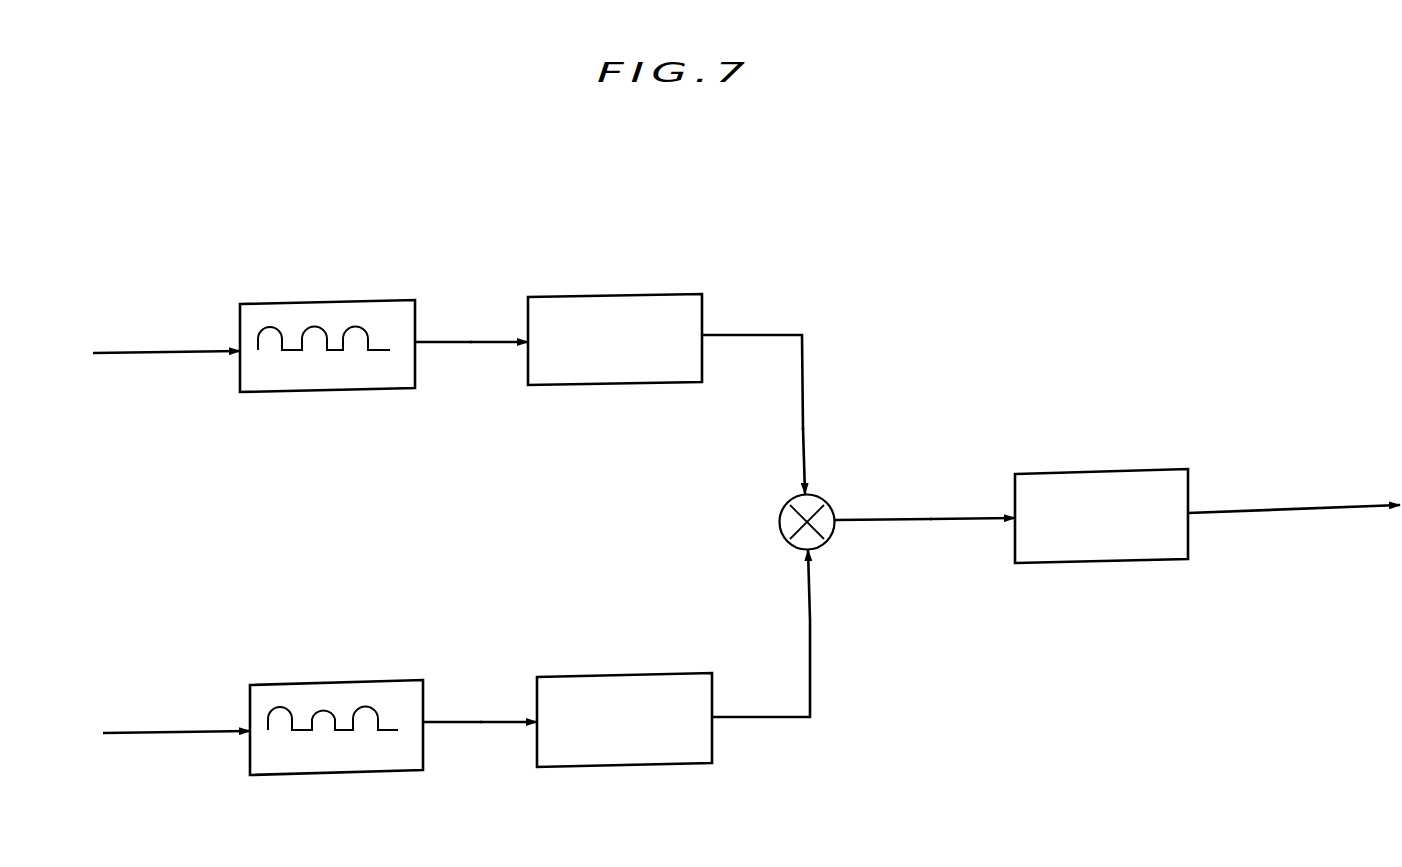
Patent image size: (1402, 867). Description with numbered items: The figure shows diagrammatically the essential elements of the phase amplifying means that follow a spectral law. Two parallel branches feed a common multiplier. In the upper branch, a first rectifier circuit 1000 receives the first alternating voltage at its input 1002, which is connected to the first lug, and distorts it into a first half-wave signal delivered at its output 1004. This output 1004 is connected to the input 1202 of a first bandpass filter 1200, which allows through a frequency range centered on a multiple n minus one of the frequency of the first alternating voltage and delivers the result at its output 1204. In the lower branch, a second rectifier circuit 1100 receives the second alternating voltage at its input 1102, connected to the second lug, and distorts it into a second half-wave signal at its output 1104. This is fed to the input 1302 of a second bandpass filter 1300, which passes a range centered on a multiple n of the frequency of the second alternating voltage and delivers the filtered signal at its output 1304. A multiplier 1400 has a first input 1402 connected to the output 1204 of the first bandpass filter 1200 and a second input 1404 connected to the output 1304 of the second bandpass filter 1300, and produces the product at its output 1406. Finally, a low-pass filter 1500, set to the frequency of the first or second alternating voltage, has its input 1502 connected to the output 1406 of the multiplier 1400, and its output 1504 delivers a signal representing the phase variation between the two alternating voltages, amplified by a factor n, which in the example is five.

The first rectifier circuit 1000 is at (333, 380).
The input of first rectifier circuit 1002 is at (238, 355).
The output of first rectifier circuit 1004 is at (417, 343).
The second rectifier circuit 1100 is at (342, 763).
The input of second rectifier circuit 1102 is at (248, 733).
The output of second rectifier circuit 1104 is at (427, 722).
The first bandpass filter 1200 is at (613, 377).
The input of first bandpass filter 1202 is at (525, 345).
The output of first bandpass filter 1204 is at (703, 338).
The second bandpass filter 1300 is at (622, 757).
The input of second bandpass filter 1302 is at (535, 727).
The output of second bandpass filter 1304 is at (713, 713).
The multiplier 1400 is at (785, 522).
The first input of multiplier 1402 is at (803, 492).
The second input of multiplier 1404 is at (808, 552).
The output of multiplier 1406 is at (835, 515).
The low-pass filter 1500 is at (1102, 547).
The input of low-pass filter 1502 is at (1012, 523).
The output of low-pass filter 1504 is at (1192, 515).